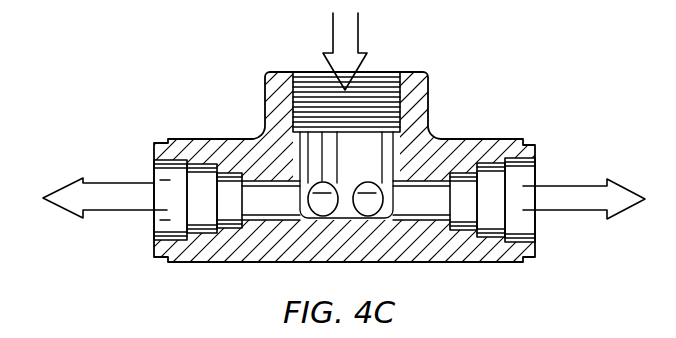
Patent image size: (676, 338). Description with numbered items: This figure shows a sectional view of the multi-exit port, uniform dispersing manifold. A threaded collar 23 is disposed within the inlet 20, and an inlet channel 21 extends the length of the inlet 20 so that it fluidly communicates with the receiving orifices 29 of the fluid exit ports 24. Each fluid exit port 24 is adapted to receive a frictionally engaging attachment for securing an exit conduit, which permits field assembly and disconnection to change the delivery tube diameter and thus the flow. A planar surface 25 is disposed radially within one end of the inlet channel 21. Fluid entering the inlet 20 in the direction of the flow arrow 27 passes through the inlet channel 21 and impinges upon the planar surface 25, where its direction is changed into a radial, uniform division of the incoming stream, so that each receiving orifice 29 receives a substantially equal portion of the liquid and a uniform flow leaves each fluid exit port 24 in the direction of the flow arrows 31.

The inlet 20 is at (400, 72).
The inlet channel 21 is at (355, 158).
The threaded collar 23 is at (306, 72).
The fluid exit port 24 is at (154, 168).
The planar surface 25 is at (375, 222).
The flow arrow 27 is at (359, 40).
The receiving orifice 29 is at (319, 184).
The flow arrow 31 is at (63, 210).